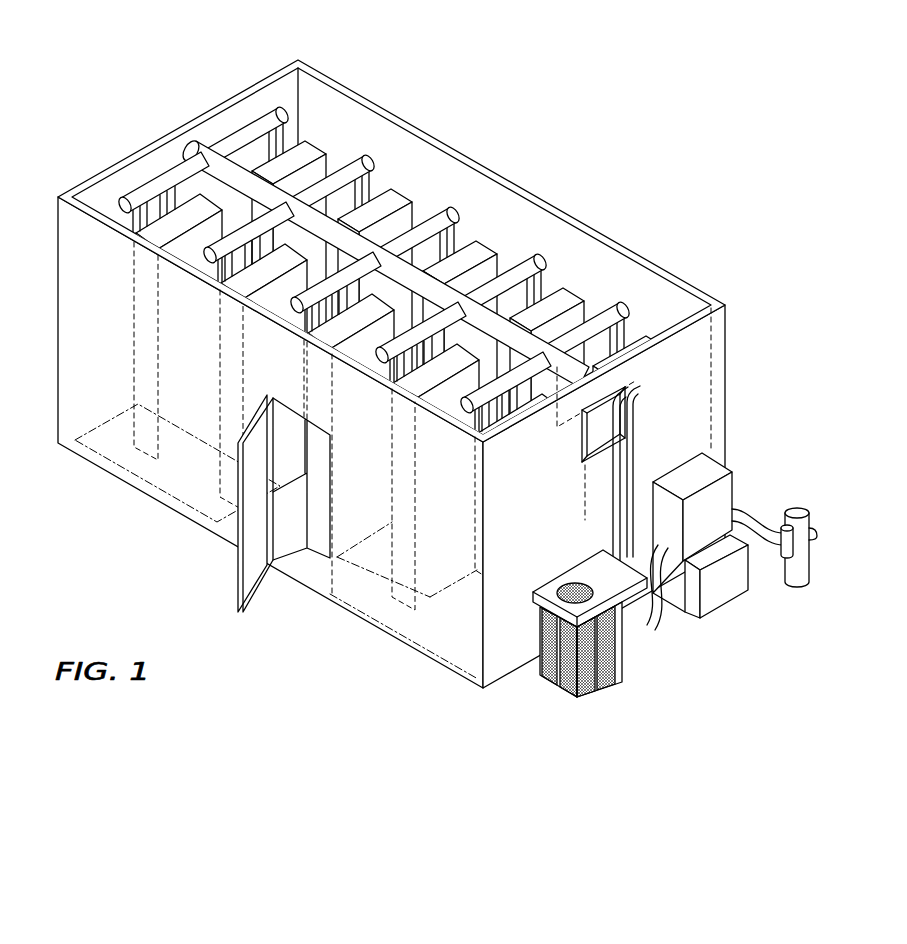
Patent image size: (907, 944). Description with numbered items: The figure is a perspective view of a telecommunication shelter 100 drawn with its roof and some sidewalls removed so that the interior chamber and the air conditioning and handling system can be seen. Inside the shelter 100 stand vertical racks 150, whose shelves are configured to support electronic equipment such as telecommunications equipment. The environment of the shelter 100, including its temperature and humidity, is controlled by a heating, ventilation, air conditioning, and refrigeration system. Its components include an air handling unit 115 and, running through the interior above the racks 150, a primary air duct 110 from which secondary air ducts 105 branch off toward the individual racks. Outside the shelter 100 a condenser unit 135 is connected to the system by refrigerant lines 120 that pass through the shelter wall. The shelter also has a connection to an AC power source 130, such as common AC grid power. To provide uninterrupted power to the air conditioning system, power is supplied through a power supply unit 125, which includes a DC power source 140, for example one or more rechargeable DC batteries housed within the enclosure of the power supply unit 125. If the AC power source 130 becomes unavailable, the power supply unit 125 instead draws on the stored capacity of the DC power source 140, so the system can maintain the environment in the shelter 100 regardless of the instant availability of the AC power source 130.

The telecommunication shelter 100 is at (637, 113).
The secondary air ducts 105 is at (424, 347).
The primary air duct 110 is at (280, 137).
The air handling unit 115 is at (587, 330).
The refrigerant lines 120 is at (637, 450).
The power supply unit 125 is at (698, 472).
The AC power source 130 is at (792, 545).
The condenser unit 135 is at (623, 655).
The DC power source 140 is at (722, 592).
The vertical racks 150 is at (148, 423).